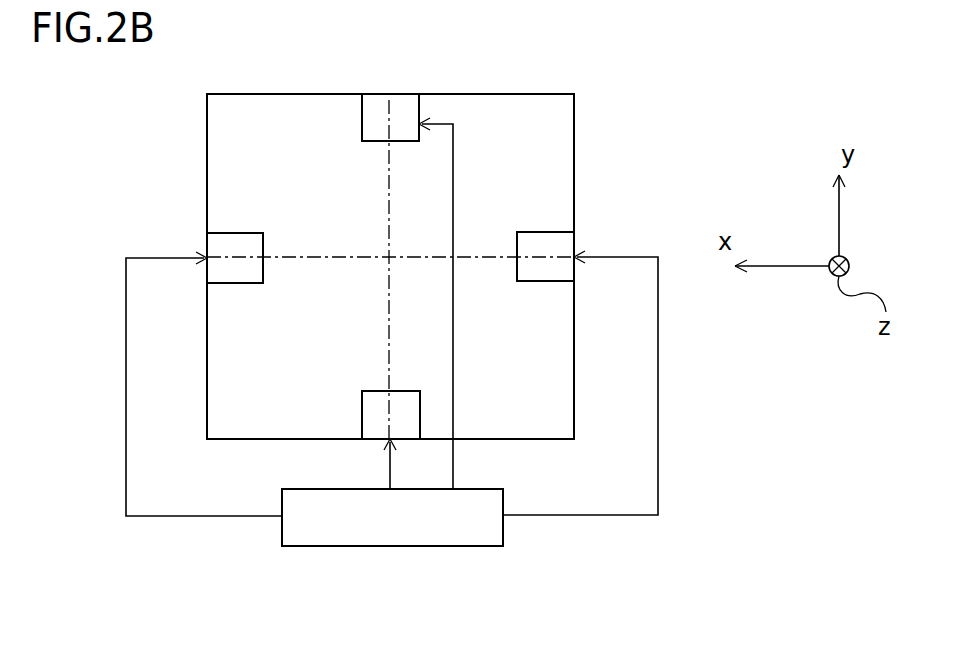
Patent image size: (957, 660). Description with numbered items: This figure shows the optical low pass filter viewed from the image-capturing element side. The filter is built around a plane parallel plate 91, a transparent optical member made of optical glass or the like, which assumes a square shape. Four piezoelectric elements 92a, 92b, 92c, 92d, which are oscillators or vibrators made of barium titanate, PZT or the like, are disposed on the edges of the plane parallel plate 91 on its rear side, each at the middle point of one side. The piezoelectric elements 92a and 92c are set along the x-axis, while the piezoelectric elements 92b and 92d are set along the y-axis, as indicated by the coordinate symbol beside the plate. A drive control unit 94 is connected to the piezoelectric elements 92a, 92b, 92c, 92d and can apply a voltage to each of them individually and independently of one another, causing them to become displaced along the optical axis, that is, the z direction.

The plane parallel plate 91 is at (516, 122).
The piezoelectric element 92a is at (555, 243).
The piezoelectric element 92b is at (387, 113).
The piezoelectric element 92c is at (237, 250).
The piezoelectric element 92d is at (405, 431).
The drive control unit 94 is at (483, 532).